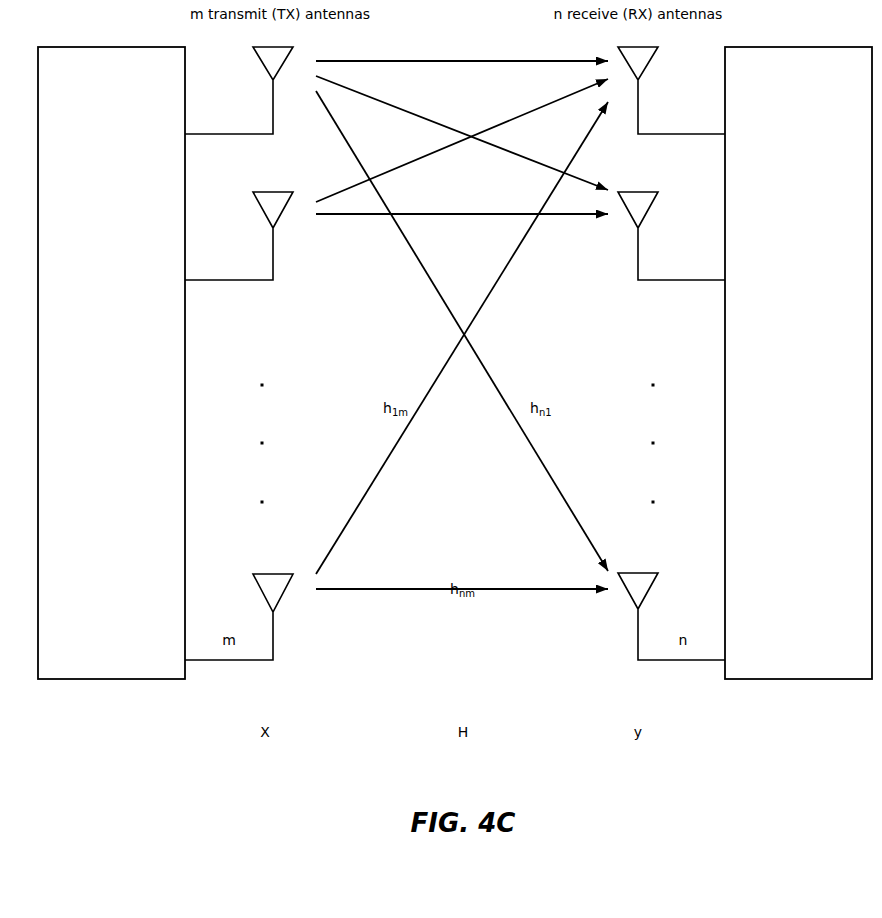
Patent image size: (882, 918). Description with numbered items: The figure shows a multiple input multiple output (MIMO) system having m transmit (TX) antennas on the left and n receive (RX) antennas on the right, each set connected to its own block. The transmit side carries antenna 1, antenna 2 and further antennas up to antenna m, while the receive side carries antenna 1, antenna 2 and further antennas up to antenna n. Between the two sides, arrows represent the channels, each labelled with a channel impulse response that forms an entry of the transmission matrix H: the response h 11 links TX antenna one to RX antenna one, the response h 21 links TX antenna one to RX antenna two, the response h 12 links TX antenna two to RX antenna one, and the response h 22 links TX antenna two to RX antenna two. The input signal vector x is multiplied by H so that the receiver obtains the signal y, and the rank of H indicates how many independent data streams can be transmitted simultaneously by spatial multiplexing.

The antenna index one 1 is at (455, 90).
The antenna index two 2 is at (455, 236).
The channel impulse response h11 11 is at (462, 62).
The channel impulse response h21 21 is at (462, 133).
The channel impulse response h12 12 is at (462, 140).
The channel impulse response h22 22 is at (462, 215).